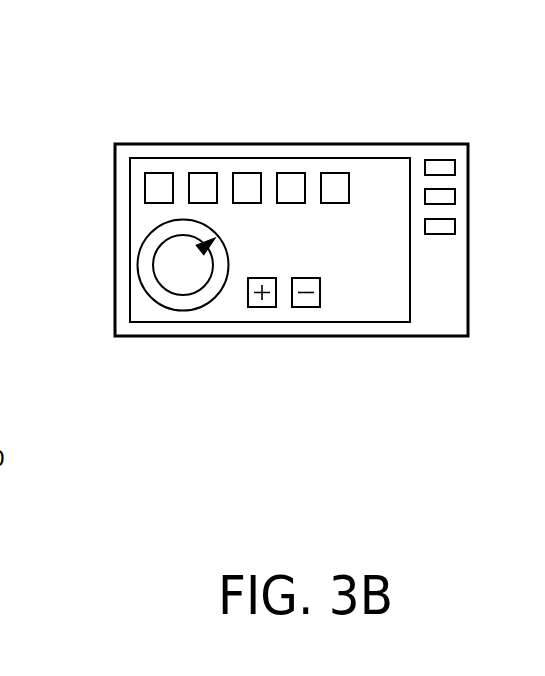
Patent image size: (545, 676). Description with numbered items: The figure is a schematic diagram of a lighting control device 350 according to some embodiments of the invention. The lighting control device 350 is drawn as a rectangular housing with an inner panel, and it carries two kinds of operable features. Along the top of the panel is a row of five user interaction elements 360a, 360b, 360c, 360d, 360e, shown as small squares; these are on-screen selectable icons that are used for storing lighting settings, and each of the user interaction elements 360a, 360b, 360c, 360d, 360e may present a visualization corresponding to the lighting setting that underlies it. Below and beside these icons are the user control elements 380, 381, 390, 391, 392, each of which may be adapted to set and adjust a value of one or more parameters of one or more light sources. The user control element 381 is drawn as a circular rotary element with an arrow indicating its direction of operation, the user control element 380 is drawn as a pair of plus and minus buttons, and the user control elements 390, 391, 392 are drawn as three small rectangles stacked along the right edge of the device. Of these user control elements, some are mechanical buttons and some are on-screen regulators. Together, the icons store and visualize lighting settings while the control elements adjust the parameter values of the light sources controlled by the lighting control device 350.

The lighting control device 350 is at (170, 342).
The user interaction element 360a is at (158, 173).
The user interaction element 360b is at (207, 173).
The user interaction element 360c is at (247, 173).
The user interaction element 360d is at (297, 173).
The user interaction element 360e is at (337, 173).
The user control element 380 is at (312, 308).
The user control element 381 is at (142, 261).
The user control element 390 is at (455, 165).
The user control element 391 is at (455, 195).
The user control element 392 is at (455, 225).